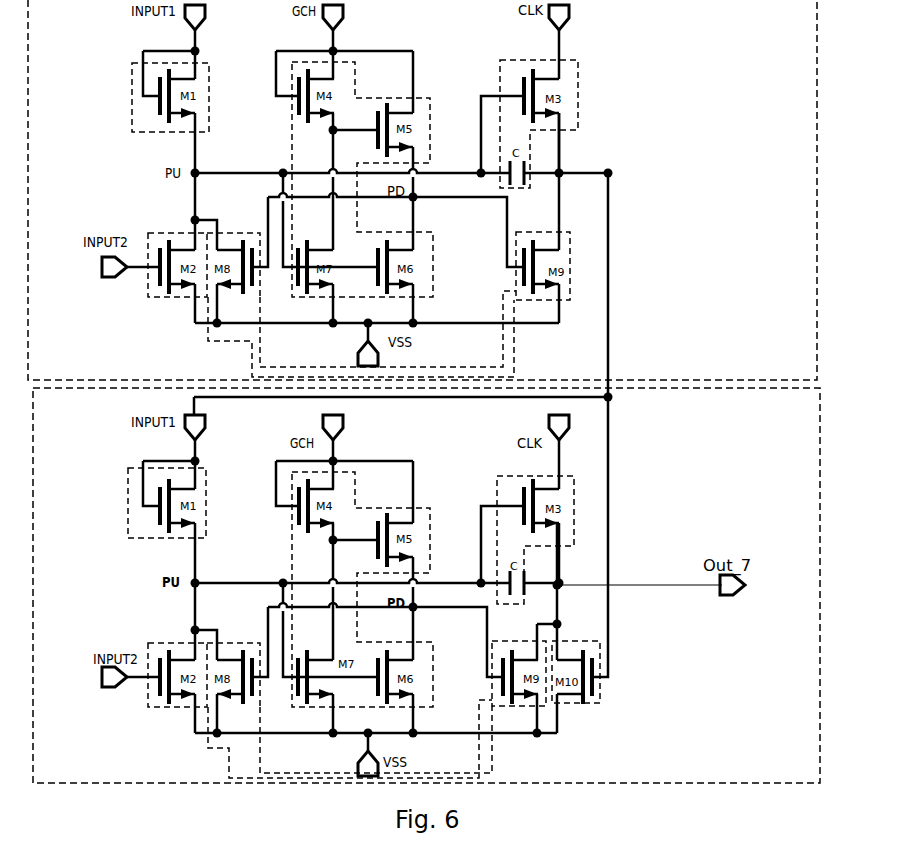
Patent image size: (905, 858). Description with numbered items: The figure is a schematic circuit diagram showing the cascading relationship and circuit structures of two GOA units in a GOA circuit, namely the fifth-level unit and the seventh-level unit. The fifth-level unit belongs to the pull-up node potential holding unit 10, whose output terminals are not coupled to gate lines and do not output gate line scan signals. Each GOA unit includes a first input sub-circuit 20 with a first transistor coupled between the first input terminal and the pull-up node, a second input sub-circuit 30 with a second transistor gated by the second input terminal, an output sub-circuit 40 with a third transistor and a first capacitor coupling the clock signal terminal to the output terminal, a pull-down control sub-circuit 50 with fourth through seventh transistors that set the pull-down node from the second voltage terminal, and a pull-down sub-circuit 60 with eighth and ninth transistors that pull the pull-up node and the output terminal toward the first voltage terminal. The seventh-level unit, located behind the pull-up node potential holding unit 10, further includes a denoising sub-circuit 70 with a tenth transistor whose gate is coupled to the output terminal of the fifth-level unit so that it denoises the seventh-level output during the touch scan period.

The pull-up node potential holding unit 10 is at (817, 282).
The first input sub-circuit 20 is at (128, 478).
The second input sub-circuit 30 is at (156, 642).
The output sub-circuit 40 is at (497, 476).
The pull-down control sub-circuit 50 is at (290, 473).
The pull-down sub-circuit 60 is at (492, 772).
The denoising sub-circuit 70 is at (600, 694).